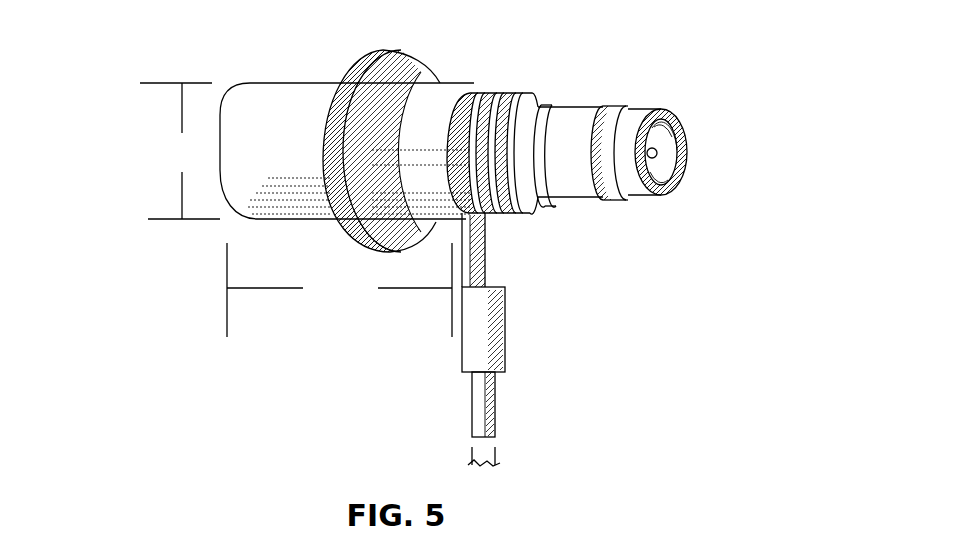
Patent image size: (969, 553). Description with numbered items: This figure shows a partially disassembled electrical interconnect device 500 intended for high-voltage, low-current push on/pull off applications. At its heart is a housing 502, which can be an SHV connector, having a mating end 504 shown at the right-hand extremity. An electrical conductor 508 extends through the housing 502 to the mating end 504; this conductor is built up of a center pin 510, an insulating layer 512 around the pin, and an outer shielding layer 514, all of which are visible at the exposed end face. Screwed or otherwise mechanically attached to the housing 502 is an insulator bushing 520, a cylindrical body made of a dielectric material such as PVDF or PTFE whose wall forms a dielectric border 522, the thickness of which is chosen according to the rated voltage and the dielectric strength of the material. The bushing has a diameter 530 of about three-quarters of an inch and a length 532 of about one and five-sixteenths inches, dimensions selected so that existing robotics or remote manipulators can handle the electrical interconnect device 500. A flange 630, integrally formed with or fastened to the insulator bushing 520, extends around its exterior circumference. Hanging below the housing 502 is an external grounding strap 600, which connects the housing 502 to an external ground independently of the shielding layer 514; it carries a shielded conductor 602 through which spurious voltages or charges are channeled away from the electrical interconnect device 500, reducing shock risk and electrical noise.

The electrical interconnect device 500 is at (227, 62).
The housing 502 is at (567, 137).
The mating end 504 is at (703, 175).
The electrical conductor 508 is at (660, 137).
The center pin 510 is at (665, 130).
The insulating layer 512 is at (659, 152).
The shielding layer 514 is at (653, 165).
The insulator bushing 520 is at (291, 157).
The dielectric border 522 is at (480, 92).
The diameter 530 is at (180, 151).
The length 532 is at (339, 290).
The external grounding strap 600 is at (480, 230).
The shielded conductor 602 is at (485, 415).
The flange 630 is at (388, 70).